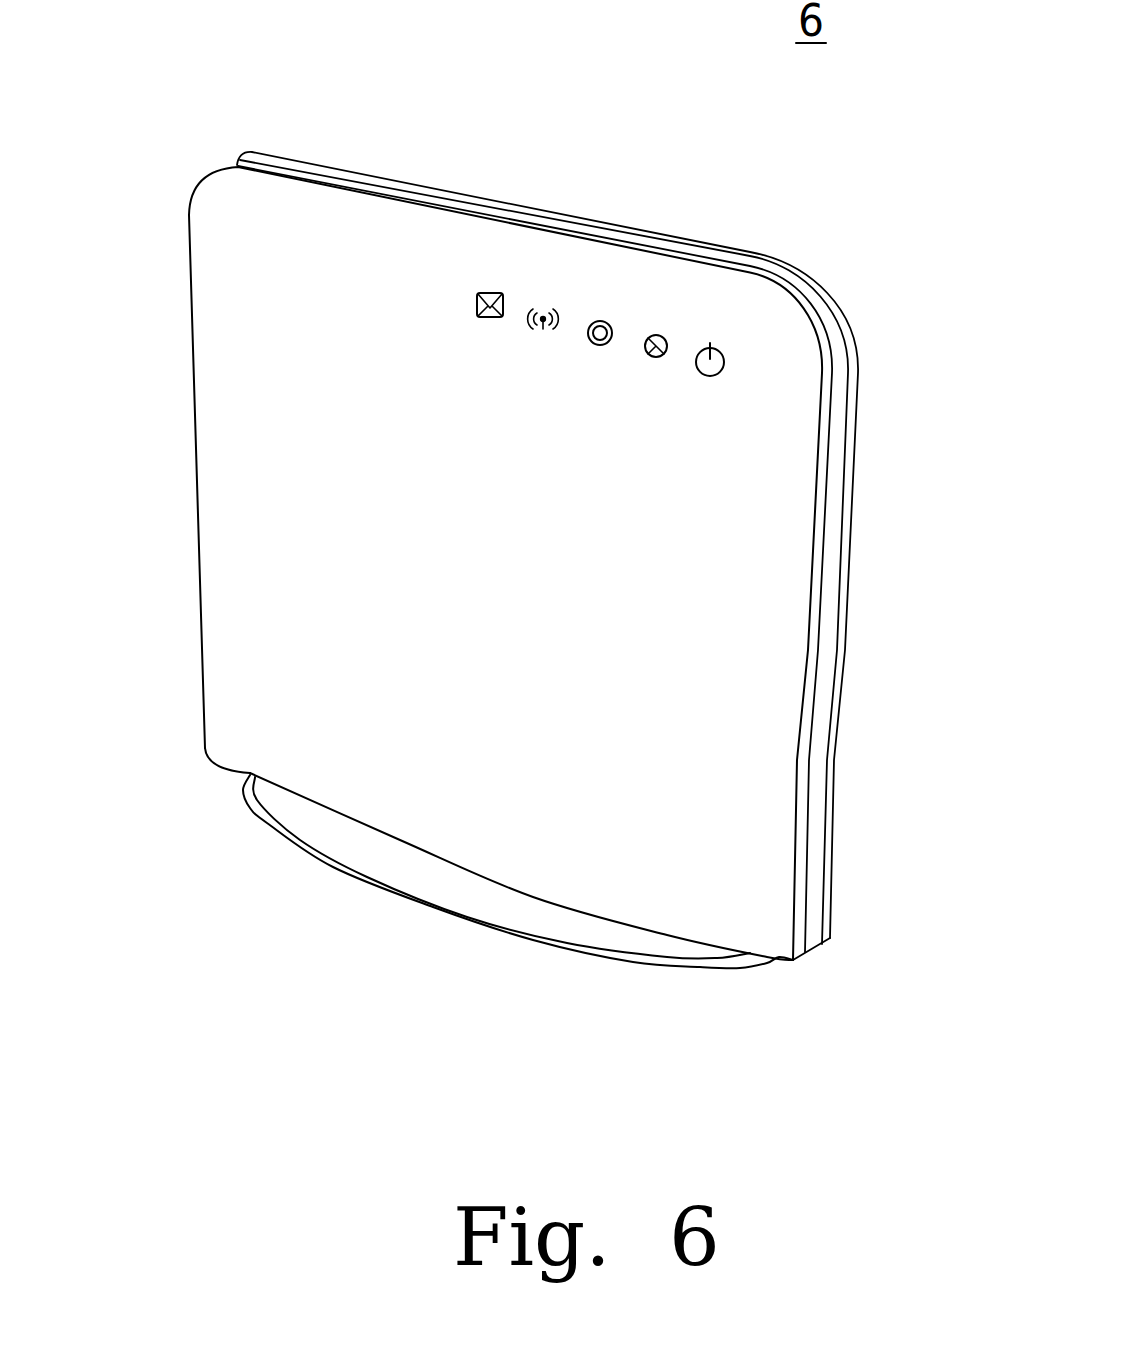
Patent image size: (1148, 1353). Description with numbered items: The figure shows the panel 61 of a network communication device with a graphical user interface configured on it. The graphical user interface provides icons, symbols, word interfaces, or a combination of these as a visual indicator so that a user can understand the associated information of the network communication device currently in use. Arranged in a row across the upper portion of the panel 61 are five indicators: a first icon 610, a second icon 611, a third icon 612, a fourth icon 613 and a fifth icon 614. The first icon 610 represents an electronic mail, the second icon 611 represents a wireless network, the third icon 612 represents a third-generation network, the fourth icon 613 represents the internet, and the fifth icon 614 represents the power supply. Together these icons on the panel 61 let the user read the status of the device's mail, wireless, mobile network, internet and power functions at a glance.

The panel 61 is at (250, 437).
The first icon 610 is at (490, 290).
The second icon 611 is at (539, 329).
The third icon 612 is at (602, 322).
The fourth icon 613 is at (653, 350).
The fifth icon 614 is at (720, 343).